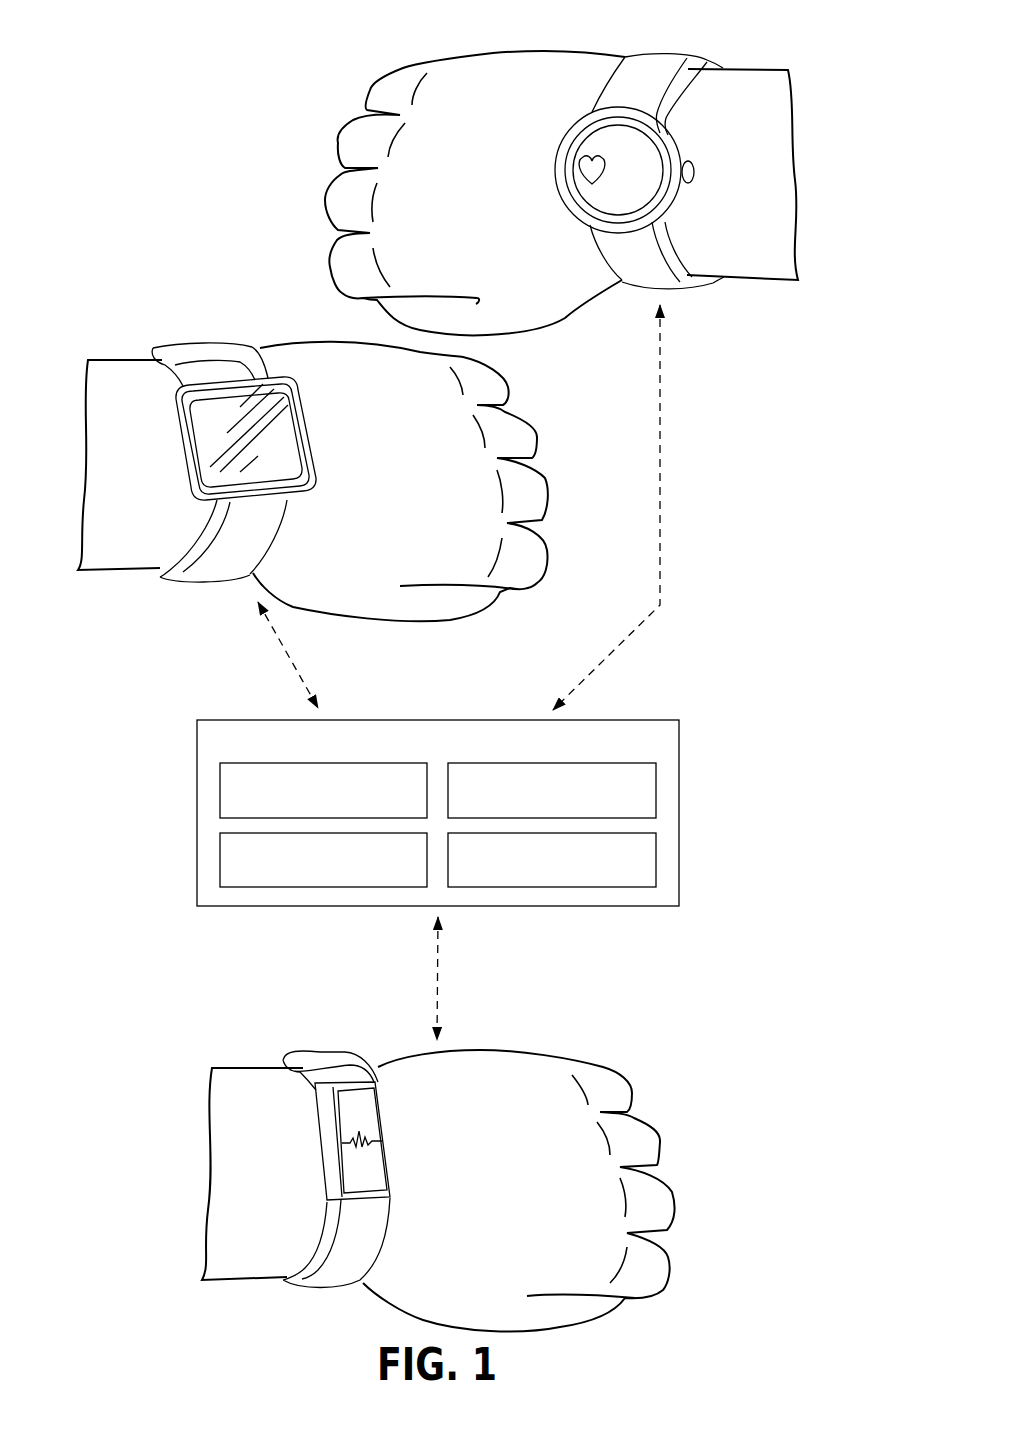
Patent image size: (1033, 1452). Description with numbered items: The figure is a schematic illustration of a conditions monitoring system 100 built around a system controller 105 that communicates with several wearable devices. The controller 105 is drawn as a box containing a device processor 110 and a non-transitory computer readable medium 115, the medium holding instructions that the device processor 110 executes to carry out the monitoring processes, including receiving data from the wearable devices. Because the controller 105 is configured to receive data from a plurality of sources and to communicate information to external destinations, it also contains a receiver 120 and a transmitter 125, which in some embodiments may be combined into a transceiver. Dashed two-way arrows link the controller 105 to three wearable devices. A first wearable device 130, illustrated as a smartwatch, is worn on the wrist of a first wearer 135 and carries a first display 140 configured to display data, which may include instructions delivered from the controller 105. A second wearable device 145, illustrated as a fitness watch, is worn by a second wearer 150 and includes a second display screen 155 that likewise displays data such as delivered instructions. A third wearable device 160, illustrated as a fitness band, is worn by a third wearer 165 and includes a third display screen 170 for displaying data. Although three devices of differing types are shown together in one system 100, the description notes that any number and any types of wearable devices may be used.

The conditions monitoring system 100 is at (128, 106).
The system controller 105 is at (439, 779).
The device processor 110 is at (220, 790).
The non-transitory computer readable medium 115 is at (656, 784).
The receiver 120 is at (220, 858).
The transmitter 125 is at (656, 858).
The first wearable device 130 is at (350, 482).
The first wearer 135 is at (133, 380).
The first display 140 is at (287, 445).
The second wearable device 145 is at (524, 193).
The second wearer 150 is at (743, 85).
The second display screen 155 is at (597, 198).
The third wearable device 160 is at (479, 1190).
The third wearer 165 is at (257, 1085).
The third display screen 170 is at (377, 1153).